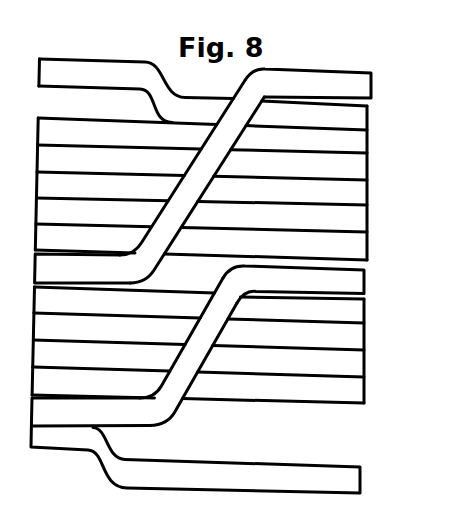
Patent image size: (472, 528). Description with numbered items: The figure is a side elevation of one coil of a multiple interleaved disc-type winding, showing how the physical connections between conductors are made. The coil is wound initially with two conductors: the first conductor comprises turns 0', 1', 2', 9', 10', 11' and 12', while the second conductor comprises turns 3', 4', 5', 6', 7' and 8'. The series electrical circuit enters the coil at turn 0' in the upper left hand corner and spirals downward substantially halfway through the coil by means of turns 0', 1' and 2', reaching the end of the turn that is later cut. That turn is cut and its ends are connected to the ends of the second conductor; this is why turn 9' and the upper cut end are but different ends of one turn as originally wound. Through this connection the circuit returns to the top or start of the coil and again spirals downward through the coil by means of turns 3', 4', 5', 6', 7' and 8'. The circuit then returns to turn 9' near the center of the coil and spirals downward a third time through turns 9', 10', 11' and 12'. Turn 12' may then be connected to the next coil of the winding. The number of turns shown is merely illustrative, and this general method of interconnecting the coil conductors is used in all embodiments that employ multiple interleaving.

The turn 0' is at (203, 91).
The turn 1' is at (201, 184).
The turn 2' is at (201, 216).
The turn 3' is at (245, 176).
The turn 4' is at (202, 183).
The turn 5' is at (201, 193).
The turn 6' is at (201, 247).
The turn 7' is at (198, 345).
The turn 8' is at (198, 365).
The turn 9' is at (252, 346).
The turn 10' is at (198, 338).
The turn 11' is at (198, 391).
The turn 12' is at (195, 459).